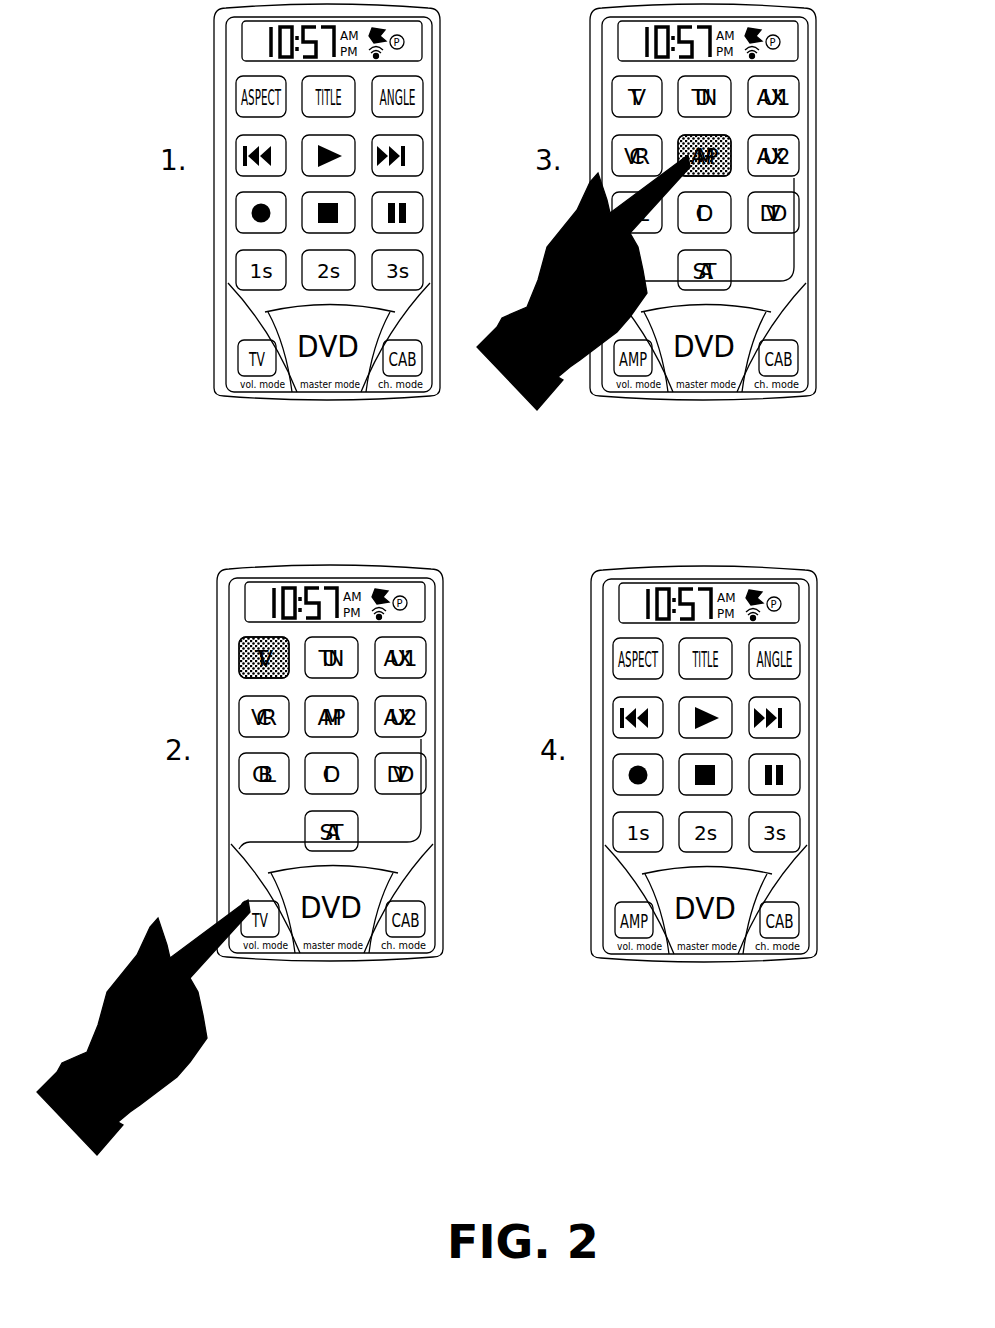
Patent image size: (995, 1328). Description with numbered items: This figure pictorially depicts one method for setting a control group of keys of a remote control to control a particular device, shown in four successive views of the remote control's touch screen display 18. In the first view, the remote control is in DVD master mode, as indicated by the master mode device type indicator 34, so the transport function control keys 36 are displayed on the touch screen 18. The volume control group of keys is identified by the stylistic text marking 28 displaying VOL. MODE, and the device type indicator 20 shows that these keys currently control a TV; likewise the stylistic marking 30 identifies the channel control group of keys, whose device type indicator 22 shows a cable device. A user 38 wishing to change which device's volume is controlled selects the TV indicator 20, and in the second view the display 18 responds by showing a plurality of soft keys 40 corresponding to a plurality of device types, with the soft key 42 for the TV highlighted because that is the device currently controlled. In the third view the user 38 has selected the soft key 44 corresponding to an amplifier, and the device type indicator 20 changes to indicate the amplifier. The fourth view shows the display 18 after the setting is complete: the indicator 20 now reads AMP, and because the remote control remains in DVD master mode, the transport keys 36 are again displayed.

The display screen 18 is at (415, 68).
The device type indicator 20 is at (240, 352).
The device type indicator 22 is at (415, 347).
The stylistic text markings 28 is at (240, 383).
The stylistic marking 30 is at (375, 388).
The master mode device type indicator 34 is at (295, 363).
The transport function control keys 36 is at (405, 123).
The user 38 is at (545, 405).
The soft keys 40 is at (513, 463).
The soft key 42 is at (240, 641).
The soft key 44 is at (728, 135).